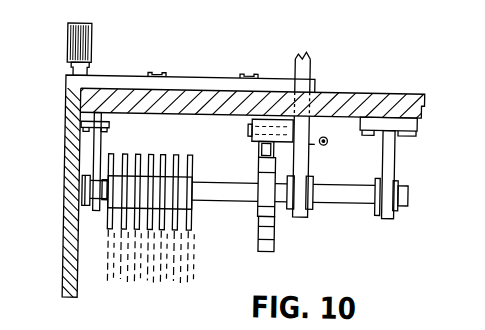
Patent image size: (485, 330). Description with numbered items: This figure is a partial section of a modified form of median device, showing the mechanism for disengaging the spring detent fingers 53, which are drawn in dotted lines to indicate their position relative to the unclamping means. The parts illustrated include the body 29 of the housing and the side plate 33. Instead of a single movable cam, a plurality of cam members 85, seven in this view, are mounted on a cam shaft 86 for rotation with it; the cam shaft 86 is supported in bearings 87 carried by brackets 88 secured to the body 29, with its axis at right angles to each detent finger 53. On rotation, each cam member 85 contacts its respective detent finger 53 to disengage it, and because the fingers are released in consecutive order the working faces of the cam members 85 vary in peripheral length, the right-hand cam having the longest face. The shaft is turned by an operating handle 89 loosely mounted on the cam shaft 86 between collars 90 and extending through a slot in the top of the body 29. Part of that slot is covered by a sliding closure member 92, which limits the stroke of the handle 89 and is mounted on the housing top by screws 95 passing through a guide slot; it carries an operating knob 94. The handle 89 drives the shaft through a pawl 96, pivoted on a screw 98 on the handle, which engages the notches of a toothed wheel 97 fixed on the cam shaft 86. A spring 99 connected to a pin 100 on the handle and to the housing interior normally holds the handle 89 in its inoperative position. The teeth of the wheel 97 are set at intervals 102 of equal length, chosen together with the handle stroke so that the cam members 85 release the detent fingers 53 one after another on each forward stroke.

The body of the housing 29 is at (372, 96).
The side plate 33 is at (66, 239).
The spring detent fingers 53 is at (194, 258).
The cam members 85 is at (177, 153).
The cam shaft 86 is at (240, 188).
The bearings 87 is at (82, 166).
The brackets 88 is at (98, 144).
The operating handle 89 is at (307, 57).
The collars 90 is at (310, 203).
The sliding closure member 92 is at (197, 89).
The operating knob 94 is at (87, 41).
The screws 95 is at (155, 73).
The pawl 96 is at (266, 148).
The toothed wheel 97 is at (266, 201).
The screw 98 is at (251, 123).
The spring 99 is at (335, 123).
The pin 100 is at (316, 140).
The intervals 102 is at (270, 219).